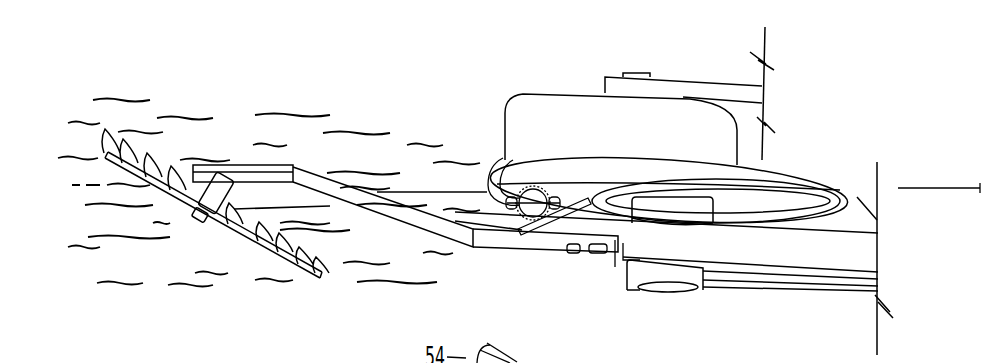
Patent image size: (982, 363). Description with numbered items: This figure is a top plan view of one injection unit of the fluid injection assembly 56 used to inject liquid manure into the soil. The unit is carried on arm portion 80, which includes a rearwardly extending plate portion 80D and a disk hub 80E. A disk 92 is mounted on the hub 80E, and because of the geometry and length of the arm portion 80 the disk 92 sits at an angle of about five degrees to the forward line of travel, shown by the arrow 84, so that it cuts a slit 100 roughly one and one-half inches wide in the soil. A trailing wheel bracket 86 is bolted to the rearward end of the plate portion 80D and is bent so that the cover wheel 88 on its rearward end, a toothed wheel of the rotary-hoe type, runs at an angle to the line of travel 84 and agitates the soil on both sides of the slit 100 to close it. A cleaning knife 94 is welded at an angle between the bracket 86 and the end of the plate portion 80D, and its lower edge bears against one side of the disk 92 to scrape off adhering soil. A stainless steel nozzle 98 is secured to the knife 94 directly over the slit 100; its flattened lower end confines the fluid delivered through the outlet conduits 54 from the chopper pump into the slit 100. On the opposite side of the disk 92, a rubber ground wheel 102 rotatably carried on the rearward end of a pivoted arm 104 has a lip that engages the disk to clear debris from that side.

The outlet fluid conduits 54 is at (533, 187).
The fluid injection assembly 56 is at (462, 108).
The arm portion 80 is at (798, 272).
The rearwardly extending plate portion 80D is at (603, 229).
The disk hub 80E is at (657, 293).
The forward line of travel 84 is at (942, 188).
The trailing wheel bracket 86 is at (515, 248).
The cover wheel 88 is at (305, 263).
The disk 92 is at (818, 182).
The cleaning knife 94 is at (577, 197).
The nozzle 98 is at (495, 173).
The slit 100 is at (405, 192).
The ground wheel 102 is at (692, 118).
The arm 104 is at (678, 82).